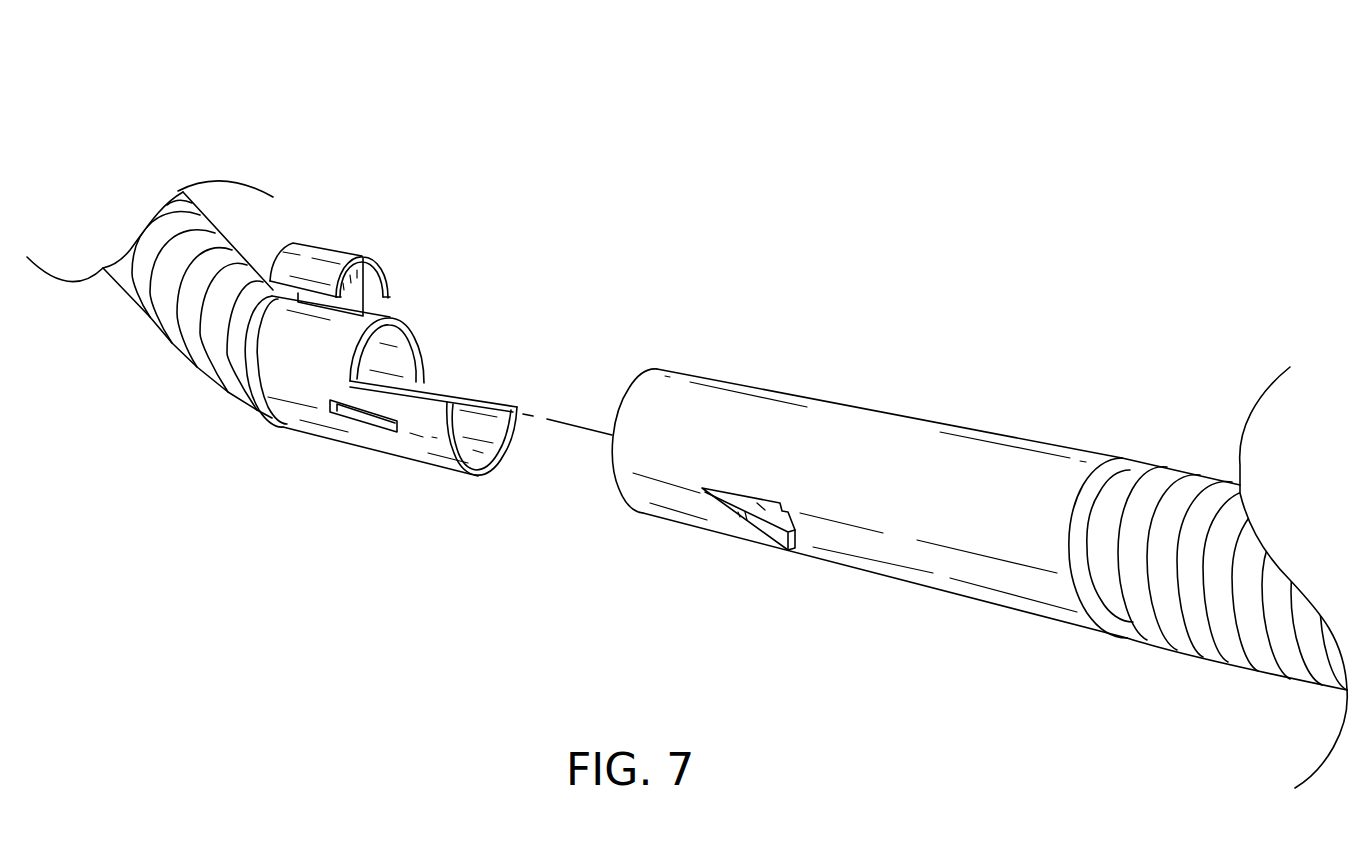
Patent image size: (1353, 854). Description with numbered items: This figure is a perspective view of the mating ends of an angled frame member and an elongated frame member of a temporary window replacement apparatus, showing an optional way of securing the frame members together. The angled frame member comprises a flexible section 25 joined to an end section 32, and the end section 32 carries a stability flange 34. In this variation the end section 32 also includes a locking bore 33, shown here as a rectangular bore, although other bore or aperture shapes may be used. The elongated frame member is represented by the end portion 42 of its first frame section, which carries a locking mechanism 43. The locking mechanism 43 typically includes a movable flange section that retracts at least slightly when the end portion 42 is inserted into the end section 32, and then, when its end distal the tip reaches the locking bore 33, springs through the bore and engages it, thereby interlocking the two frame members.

The flexible section 25 is at (163, 306).
The end section 32 is at (308, 363).
The locking bore 33 is at (373, 417).
The stability flange 34 is at (315, 256).
The end portion 42 is at (897, 452).
The locking mechanism 43 is at (760, 525).